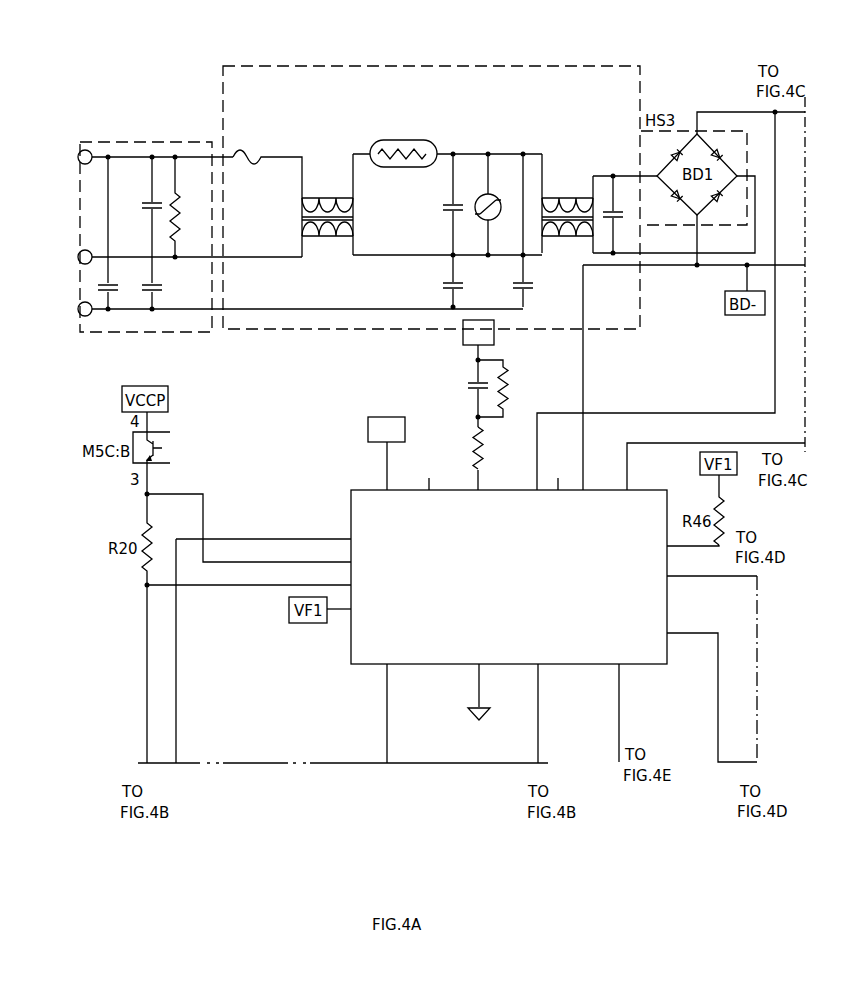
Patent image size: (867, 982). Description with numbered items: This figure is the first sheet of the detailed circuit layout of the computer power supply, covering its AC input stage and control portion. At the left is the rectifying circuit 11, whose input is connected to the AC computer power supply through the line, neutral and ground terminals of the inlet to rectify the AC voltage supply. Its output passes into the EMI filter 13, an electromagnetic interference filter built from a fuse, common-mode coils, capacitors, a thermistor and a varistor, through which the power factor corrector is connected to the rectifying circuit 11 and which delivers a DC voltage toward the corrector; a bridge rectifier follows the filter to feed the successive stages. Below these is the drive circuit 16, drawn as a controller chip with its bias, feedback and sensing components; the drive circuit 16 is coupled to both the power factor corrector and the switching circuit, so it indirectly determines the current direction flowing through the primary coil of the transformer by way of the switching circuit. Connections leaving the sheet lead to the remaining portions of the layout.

The rectifying circuit 11 is at (99, 146).
The EMI filter 13 is at (306, 78).
The drive circuit 16 is at (351, 492).